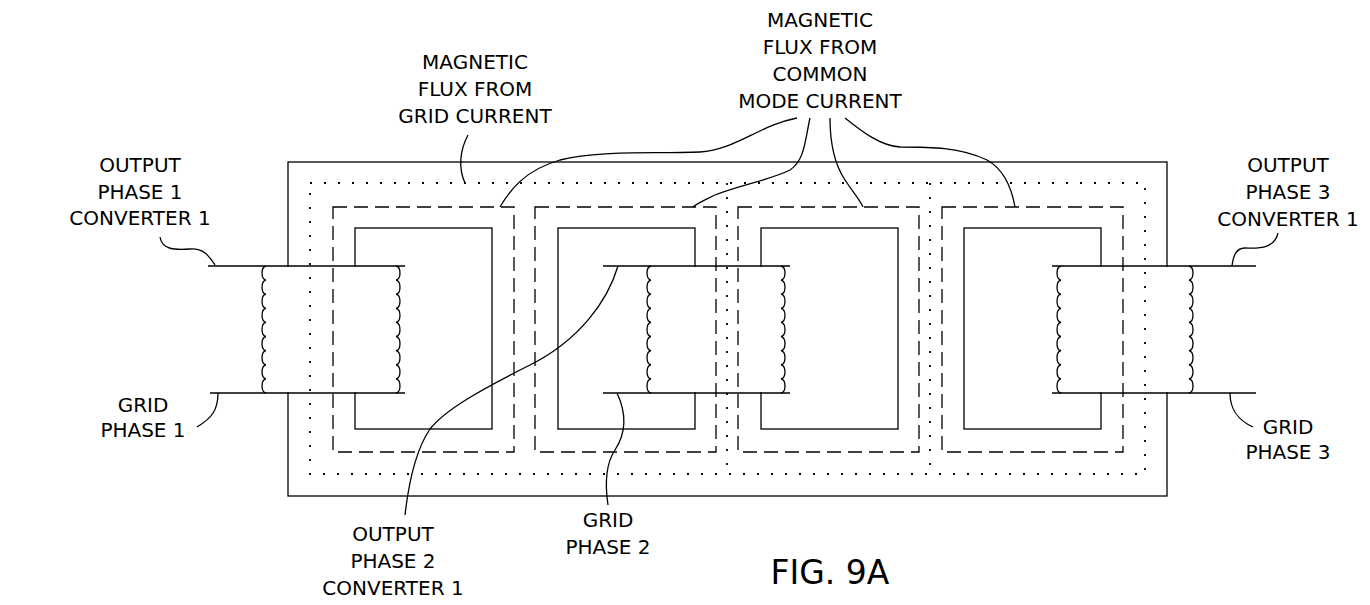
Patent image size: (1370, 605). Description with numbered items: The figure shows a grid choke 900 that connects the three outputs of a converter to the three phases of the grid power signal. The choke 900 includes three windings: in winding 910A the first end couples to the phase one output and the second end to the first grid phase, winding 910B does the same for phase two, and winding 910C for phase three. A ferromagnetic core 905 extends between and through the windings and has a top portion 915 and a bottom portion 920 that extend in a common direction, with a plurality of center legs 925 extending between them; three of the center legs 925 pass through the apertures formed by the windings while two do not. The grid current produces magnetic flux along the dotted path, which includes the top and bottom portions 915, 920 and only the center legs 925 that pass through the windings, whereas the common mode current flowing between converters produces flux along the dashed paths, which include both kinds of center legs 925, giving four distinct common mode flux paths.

The grid choke 900 is at (693, 272).
The core 905 is at (1010, 497).
The winding 910A is at (257, 340).
The winding 910B is at (790, 313).
The winding 910C is at (1052, 333).
The top portion 915 is at (278, 192).
The bottom portion 920 is at (278, 480).
The center legs 925 is at (481, 322).